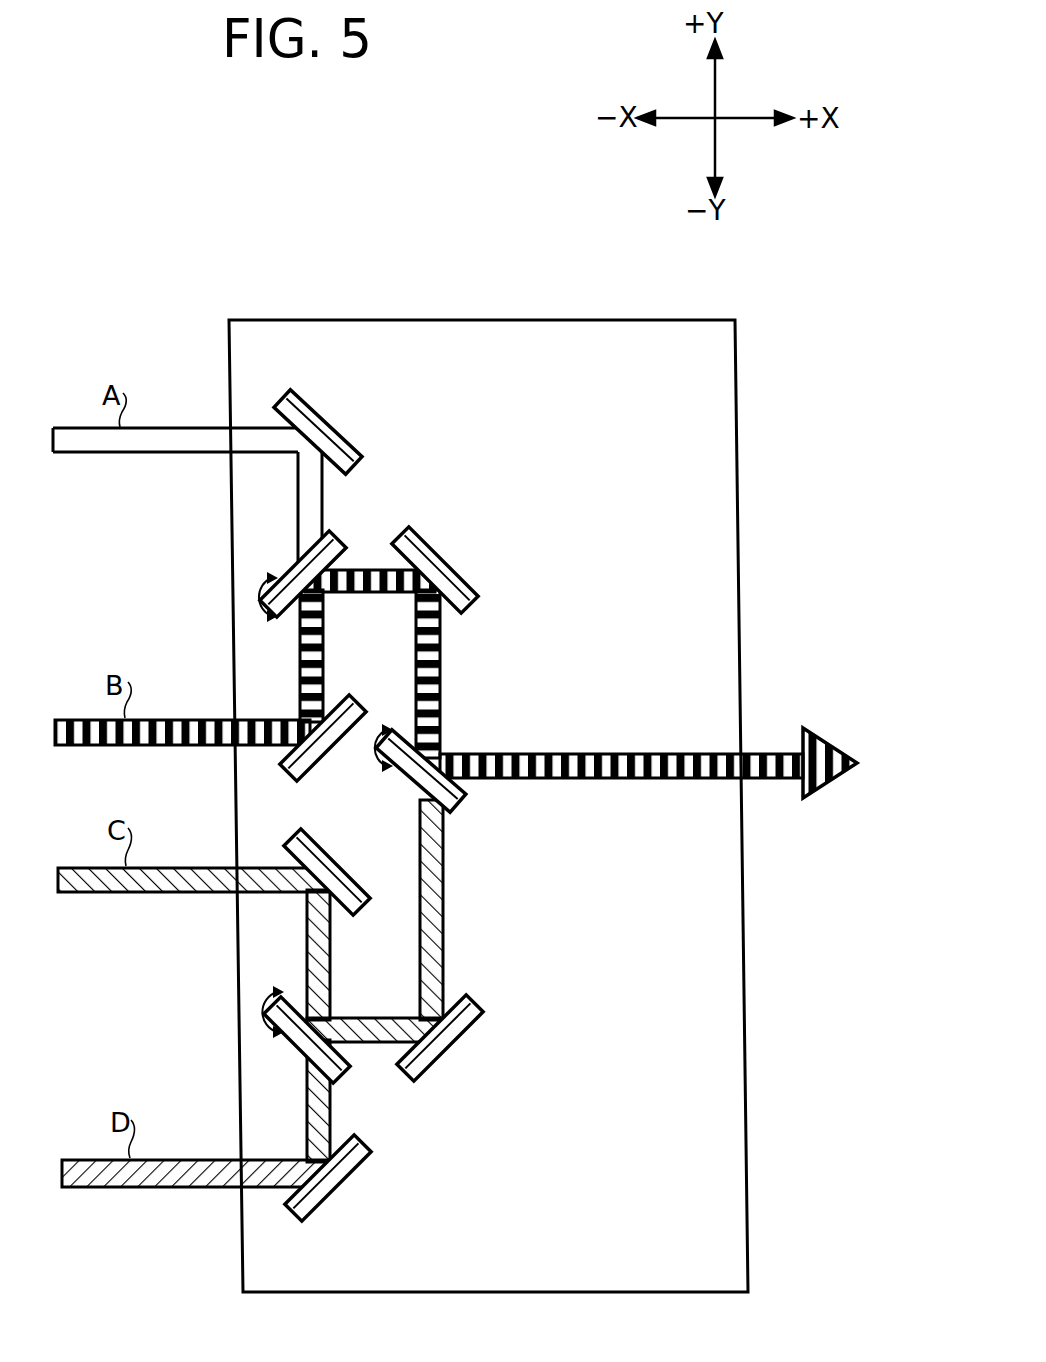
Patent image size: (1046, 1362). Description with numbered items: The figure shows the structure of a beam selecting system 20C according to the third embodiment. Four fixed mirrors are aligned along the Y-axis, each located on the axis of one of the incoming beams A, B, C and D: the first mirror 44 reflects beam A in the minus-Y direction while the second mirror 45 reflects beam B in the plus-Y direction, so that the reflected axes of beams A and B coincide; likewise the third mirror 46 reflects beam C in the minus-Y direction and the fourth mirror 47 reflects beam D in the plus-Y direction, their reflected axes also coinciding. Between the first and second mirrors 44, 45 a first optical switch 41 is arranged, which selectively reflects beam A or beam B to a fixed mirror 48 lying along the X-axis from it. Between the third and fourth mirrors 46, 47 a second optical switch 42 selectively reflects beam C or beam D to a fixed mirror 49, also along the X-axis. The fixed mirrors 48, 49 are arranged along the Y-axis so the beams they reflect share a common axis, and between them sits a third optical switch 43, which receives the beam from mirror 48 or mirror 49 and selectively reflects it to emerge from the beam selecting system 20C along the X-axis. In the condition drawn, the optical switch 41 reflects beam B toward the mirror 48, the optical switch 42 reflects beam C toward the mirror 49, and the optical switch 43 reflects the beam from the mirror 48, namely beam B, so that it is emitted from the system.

The beam selecting system 20C is at (455, 264).
The first optical switch 41 is at (295, 573).
The second optical switch 42 is at (307, 1042).
The third optical switch 43 is at (410, 777).
The first fixed mirror 44 is at (320, 427).
The second fixed mirror 45 is at (350, 713).
The third fixed mirror 46 is at (347, 880).
The fourth fixed mirror 47 is at (330, 1193).
The fixed mirror 48 is at (437, 563).
The fixed mirror 49 is at (445, 1045).